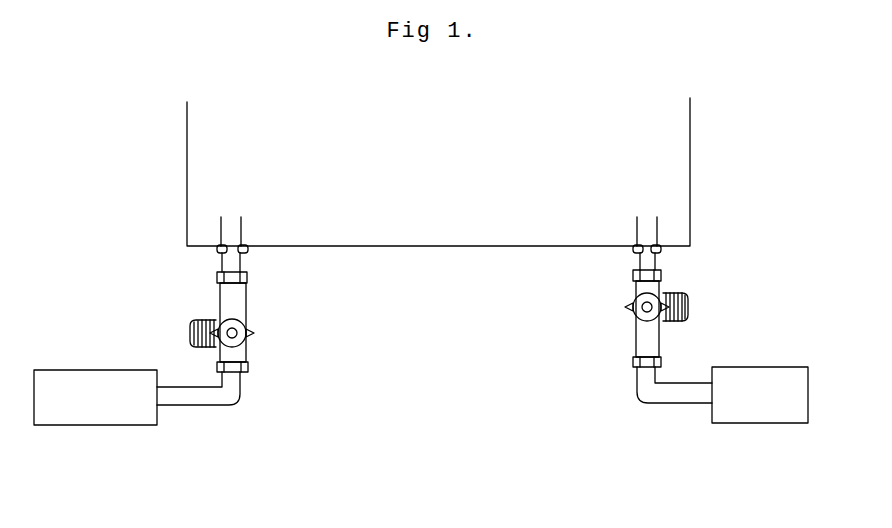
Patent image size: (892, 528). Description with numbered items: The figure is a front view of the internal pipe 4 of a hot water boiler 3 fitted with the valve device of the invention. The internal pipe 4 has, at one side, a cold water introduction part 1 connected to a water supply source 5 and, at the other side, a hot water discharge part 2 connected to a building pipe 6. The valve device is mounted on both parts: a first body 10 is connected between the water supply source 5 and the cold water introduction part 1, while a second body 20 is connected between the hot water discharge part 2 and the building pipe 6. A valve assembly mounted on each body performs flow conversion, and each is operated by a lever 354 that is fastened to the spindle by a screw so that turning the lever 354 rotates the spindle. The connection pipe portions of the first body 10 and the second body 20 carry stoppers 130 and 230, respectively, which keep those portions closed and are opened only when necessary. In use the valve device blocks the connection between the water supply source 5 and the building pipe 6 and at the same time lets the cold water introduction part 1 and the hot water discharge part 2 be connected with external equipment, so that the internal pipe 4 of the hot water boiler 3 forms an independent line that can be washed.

The cold water introduction part 1 is at (660, 262).
The hot water discharge part 2 is at (250, 266).
The hot water boiler 3 is at (690, 168).
The internal pipe 4 is at (648, 226).
The water supply source 5 is at (772, 375).
The building pipe 6 is at (102, 390).
The first body 10 is at (626, 347).
The second body 20 is at (252, 298).
The stopper 130 is at (690, 305).
The stopper 230 is at (190, 330).
The lever 354 is at (252, 342).